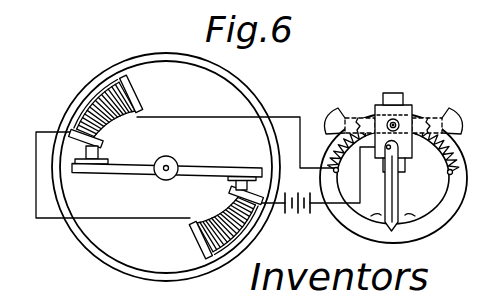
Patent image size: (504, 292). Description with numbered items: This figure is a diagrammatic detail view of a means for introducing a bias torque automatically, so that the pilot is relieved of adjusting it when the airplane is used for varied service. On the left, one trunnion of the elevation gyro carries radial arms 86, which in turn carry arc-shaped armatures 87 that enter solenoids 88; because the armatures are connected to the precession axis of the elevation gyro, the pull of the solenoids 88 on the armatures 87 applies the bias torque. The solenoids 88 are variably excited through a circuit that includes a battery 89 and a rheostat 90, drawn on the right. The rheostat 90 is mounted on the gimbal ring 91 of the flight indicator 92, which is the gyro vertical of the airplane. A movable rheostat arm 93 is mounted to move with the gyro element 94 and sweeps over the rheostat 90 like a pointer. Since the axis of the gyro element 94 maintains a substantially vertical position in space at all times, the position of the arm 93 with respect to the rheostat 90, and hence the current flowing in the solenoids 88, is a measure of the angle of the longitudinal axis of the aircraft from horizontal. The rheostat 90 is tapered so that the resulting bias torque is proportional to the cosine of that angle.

The radial arms 86 is at (203, 166).
The arc-shaped armatures 87 is at (93, 152).
The solenoids 88 is at (107, 88).
The battery 89 is at (294, 214).
The rheostat 90 is at (356, 228).
The gimbal ring 91 is at (424, 126).
The flight indicator 92 is at (352, 112).
The movable rheostat arm 93 is at (390, 191).
The gyro element 94 is at (394, 112).